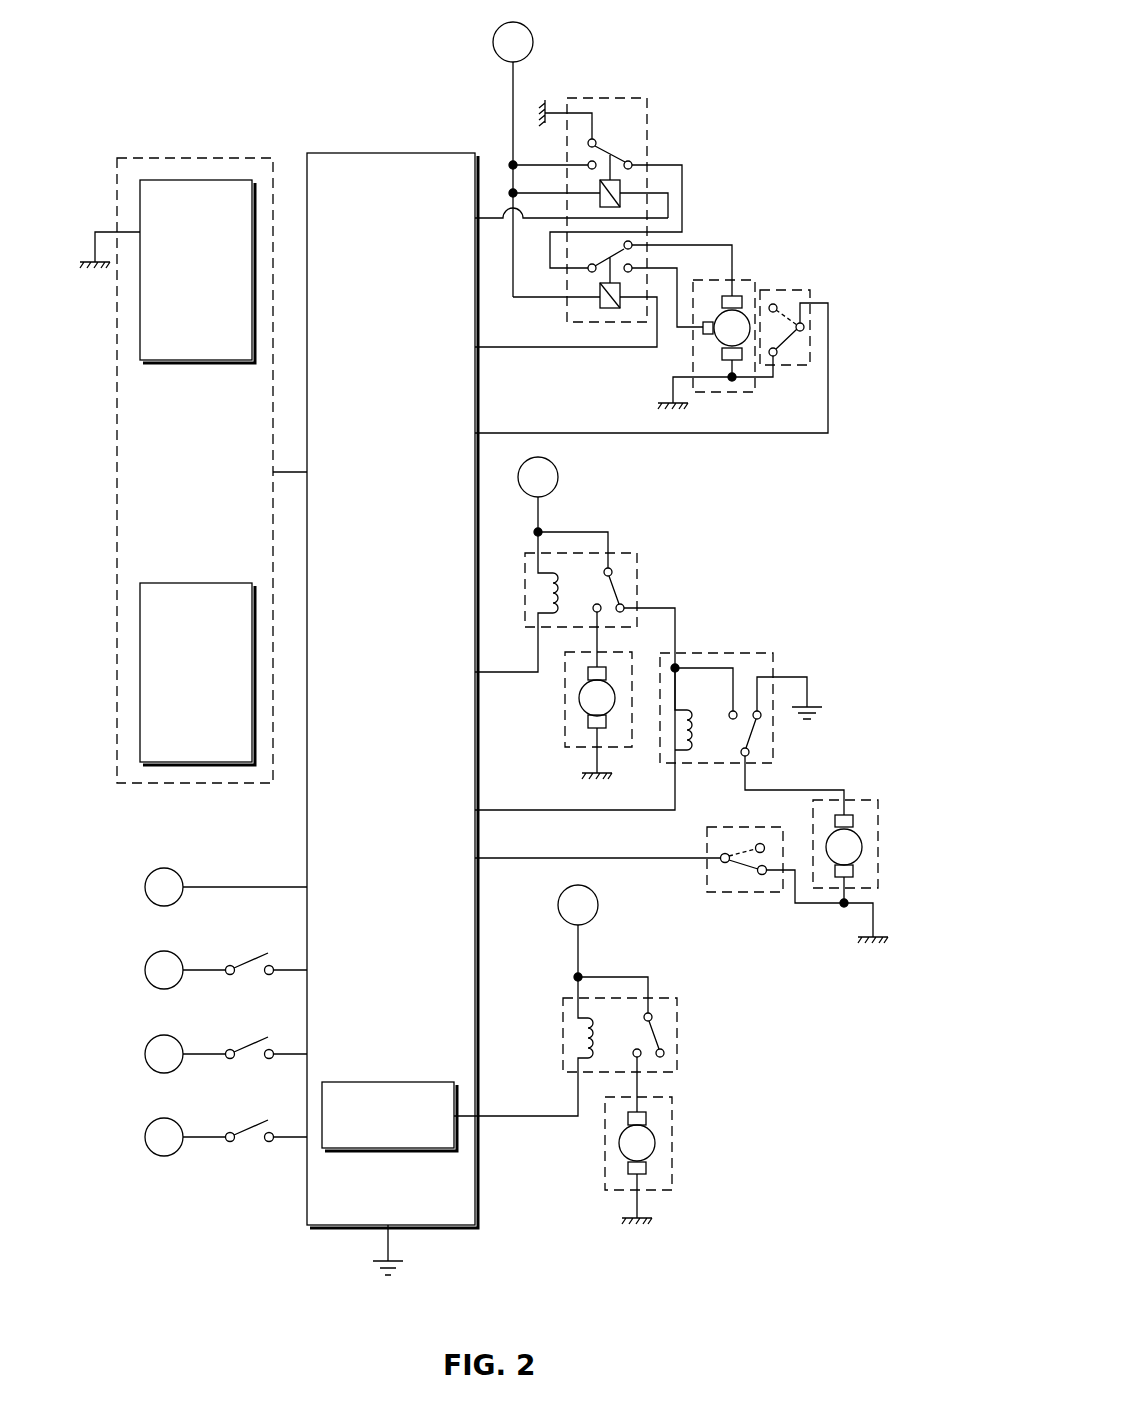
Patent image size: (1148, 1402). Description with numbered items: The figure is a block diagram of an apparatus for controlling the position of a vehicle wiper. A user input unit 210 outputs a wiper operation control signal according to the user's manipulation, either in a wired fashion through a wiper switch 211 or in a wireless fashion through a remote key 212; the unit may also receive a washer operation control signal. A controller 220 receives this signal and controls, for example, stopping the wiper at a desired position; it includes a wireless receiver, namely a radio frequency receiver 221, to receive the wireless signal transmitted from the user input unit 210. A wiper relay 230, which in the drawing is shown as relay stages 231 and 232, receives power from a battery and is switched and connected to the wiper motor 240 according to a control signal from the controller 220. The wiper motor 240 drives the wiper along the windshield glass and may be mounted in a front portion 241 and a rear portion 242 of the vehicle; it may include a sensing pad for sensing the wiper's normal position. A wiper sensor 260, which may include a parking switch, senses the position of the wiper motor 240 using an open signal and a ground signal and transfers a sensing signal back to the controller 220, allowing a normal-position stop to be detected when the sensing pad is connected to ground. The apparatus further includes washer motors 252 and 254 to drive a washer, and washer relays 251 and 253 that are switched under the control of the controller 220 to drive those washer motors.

The user input unit 210 is at (147, 158).
The wiper switch 211 is at (213, 180).
The remote key 212 is at (213, 583).
The controller 220 is at (418, 153).
The radio frequency (RF) receiver 221 is at (405, 1082).
The wiper relay 230 is at (792, 590).
The first relay 231 is at (647, 116).
The second relay 232 is at (765, 653).
The wiper motor 240 is at (810, 233).
The front portion 241 is at (748, 280).
The rear portion 242 is at (866, 800).
The washer relay 251 is at (637, 568).
The washer motor 252 is at (565, 723).
The washer relay 253 is at (658, 998).
The washer motor 254 is at (605, 1167).
The wiper sensor 260 is at (790, 370).